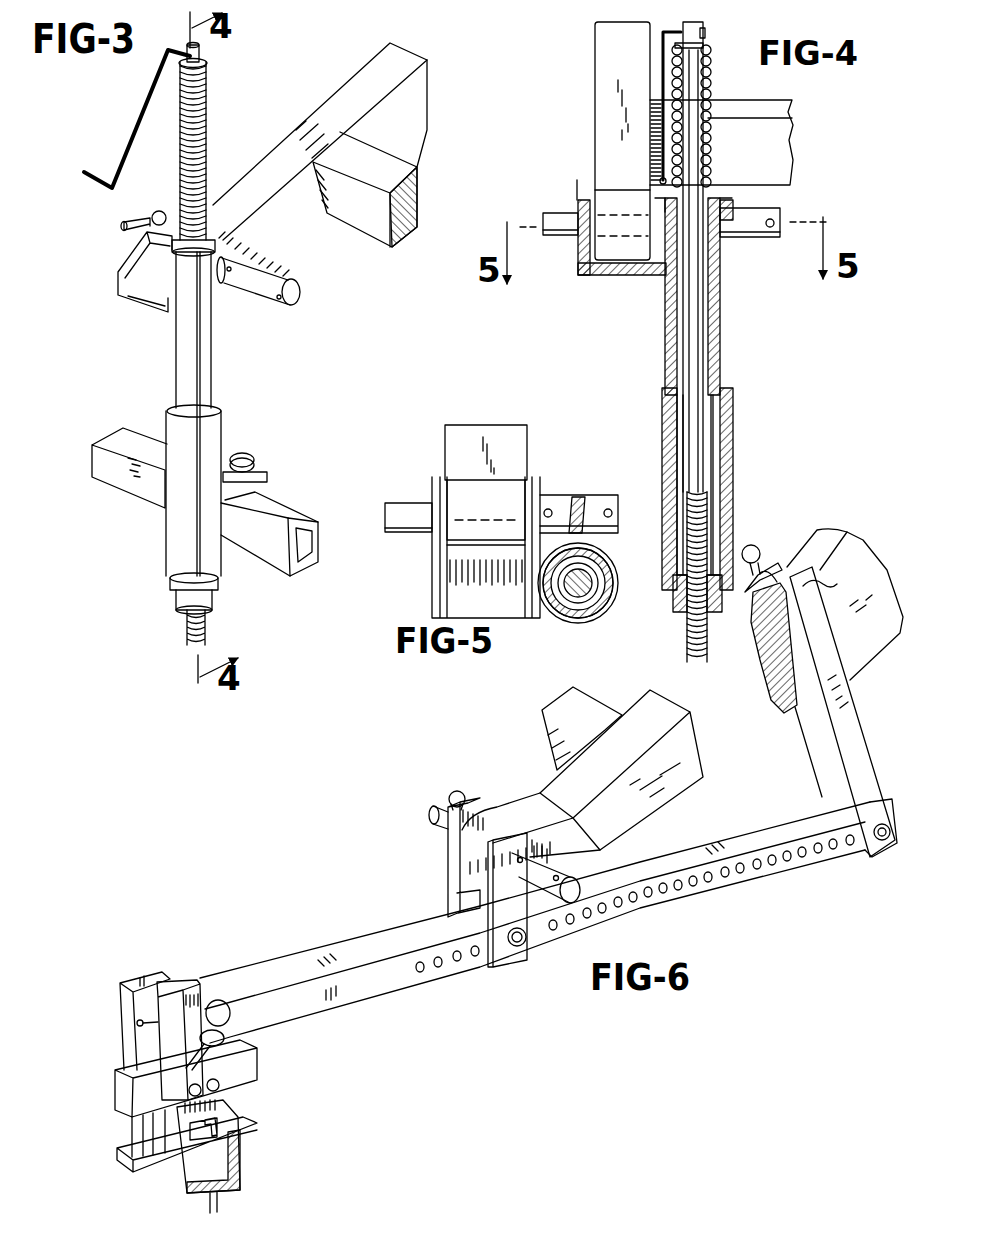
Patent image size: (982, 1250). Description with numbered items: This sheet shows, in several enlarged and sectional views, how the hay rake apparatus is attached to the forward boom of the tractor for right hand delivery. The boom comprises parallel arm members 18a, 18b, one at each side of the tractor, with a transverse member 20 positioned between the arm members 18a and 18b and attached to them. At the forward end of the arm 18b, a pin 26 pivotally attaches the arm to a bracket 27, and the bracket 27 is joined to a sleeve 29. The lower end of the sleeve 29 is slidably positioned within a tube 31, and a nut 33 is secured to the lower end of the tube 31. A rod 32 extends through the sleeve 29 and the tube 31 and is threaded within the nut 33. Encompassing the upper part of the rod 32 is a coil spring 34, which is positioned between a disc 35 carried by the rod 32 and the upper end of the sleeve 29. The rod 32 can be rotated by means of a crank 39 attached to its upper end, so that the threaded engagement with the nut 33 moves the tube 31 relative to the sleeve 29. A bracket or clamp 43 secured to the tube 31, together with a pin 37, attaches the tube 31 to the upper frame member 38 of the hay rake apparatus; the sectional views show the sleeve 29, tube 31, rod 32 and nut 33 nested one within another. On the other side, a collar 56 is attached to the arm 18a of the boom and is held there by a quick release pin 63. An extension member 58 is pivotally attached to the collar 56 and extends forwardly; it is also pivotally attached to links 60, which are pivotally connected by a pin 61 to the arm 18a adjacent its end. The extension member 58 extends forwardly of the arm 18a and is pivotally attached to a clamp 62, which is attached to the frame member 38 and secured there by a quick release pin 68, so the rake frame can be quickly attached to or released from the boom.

In FIG. 5, the arm member 18a is at (497, 432).
In FIG. 6, the arm member 18a is at (777, 677).
In FIG. 3, the arm member 18b is at (350, 95).
In FIG. 4, the arm member 18b is at (596, 80).
In FIG. 3, the transverse member 20 is at (406, 166).
In FIG. 4, the transverse member 20 is at (790, 132).
In FIG. 6, the transverse member 20 is at (553, 745).
In FIG. 3, the pin 26 is at (275, 278).
In FIG. 4, the pin 26 is at (753, 238).
In FIG. 5, the pin 26 is at (594, 500).
In FIG. 6, the pin 26 is at (546, 878).
In FIG. 3, the bracket 27 is at (130, 300).
In FIG. 4, the bracket 27 is at (628, 274).
In FIG. 5, the bracket 27 is at (440, 588).
In FIG. 3, the sleeve 29 is at (177, 347).
In FIG. 4, the sleeve 29 is at (668, 340).
In FIG. 5, the sleeve 29 is at (584, 622).
In FIG. 3, the tube 31 is at (176, 532).
In FIG. 4, the tube 31 is at (665, 441).
In FIG. 5, the tube 31 is at (560, 620).
In FIG. 3, the rod 32 is at (201, 57).
In FIG. 4, the rod 32 is at (710, 32).
In FIG. 5, the rod 32 is at (595, 598).
In FIG. 3, the nut 33 is at (180, 591).
In FIG. 4, the nut 33 is at (674, 608).
In FIG. 3, the coil spring 34 is at (209, 132).
In FIG. 4, the coil spring 34 is at (712, 84).
In FIG. 3, the disc 35 is at (208, 80).
In FIG. 4, the disc 35 is at (708, 48).
In FIG. 3, the pin 37 is at (245, 458).
In FIG. 3, the frame member 38 is at (121, 486).
In FIG. 6, the frame member 38 is at (123, 1020).
In FIG. 3, the crank 39 is at (141, 120).
In FIG. 4, the crank 39 is at (662, 148).
In FIG. 3, the bracket or clamp 43 is at (268, 480).
In FIG. 6, the collar 56 is at (840, 728).
In FIG. 6, the extension member 58 is at (769, 874).
In FIG. 6, the links 60 is at (456, 880).
In FIG. 6, the pin 61 is at (440, 806).
In FIG. 6, the clamp 62 is at (120, 1096).
In FIG. 6, the quick release pin 63 is at (781, 566).
In FIG. 6, the quick release pin 68 is at (240, 1098).